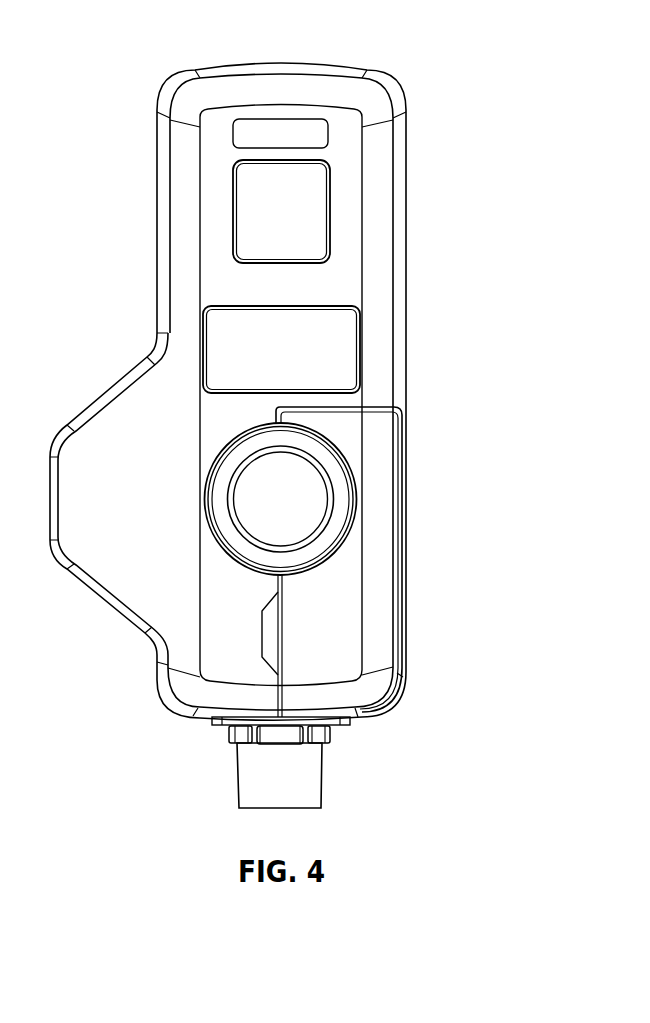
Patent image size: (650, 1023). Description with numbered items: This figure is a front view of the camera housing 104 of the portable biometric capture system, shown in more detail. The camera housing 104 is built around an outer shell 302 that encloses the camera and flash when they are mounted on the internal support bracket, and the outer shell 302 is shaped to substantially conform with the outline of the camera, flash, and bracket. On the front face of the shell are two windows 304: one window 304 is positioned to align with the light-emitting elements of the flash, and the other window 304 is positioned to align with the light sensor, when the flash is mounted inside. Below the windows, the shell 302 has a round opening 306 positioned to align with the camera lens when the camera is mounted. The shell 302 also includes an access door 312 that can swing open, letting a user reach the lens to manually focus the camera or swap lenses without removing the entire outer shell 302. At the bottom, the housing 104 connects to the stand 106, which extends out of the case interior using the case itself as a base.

The camera housing 104 is at (150, 68).
The outer shell 302 is at (400, 151).
The windows 304 is at (307, 220).
The opening 306 is at (338, 490).
The access door 312 is at (347, 638).
The stand 106 is at (323, 785).